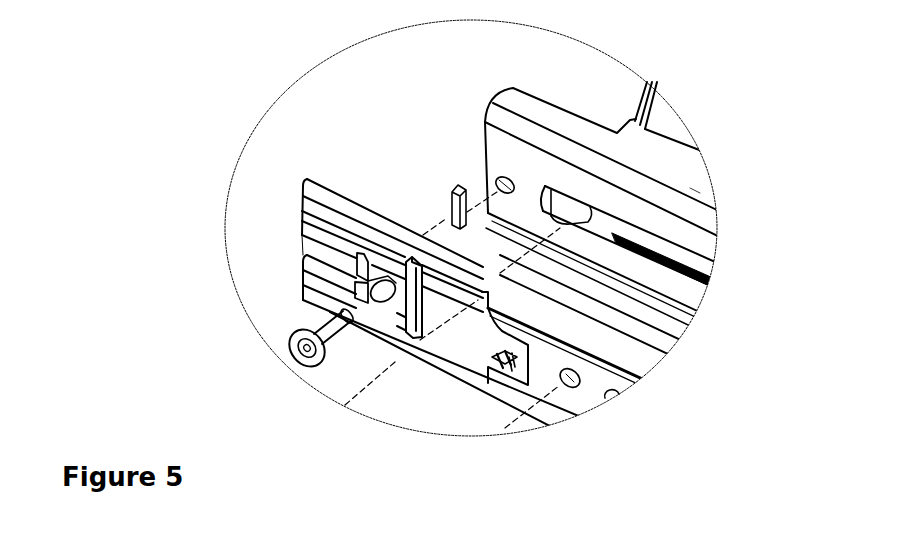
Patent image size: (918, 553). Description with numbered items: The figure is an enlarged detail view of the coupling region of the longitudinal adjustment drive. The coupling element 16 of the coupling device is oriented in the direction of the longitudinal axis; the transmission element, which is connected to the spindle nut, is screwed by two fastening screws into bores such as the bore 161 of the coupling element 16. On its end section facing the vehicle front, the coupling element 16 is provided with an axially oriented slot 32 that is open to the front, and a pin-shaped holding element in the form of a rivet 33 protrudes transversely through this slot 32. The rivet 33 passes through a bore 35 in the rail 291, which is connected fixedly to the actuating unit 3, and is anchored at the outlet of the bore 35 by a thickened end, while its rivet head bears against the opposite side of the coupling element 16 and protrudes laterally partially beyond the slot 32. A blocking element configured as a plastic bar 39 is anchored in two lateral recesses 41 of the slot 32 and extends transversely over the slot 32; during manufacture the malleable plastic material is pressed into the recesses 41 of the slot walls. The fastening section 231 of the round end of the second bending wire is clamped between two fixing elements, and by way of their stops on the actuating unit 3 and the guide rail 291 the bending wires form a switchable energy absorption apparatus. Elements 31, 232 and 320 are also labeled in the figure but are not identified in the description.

The actuating unit 3 is at (610, 80).
The slot opening 232 is at (560, 207).
The fastening section 231 is at (604, 228).
The guide rail 291 is at (690, 188).
The bore 35 is at (497, 182).
The plastic bar 39 is at (452, 191).
The clamp block 31 is at (316, 203).
The slot 32 is at (316, 248).
The rivet 33 is at (290, 344).
The lateral recesses 41 is at (355, 268).
The bracket 320 is at (400, 323).
The coupling element 16 is at (632, 363).
The bore 161 is at (574, 385).